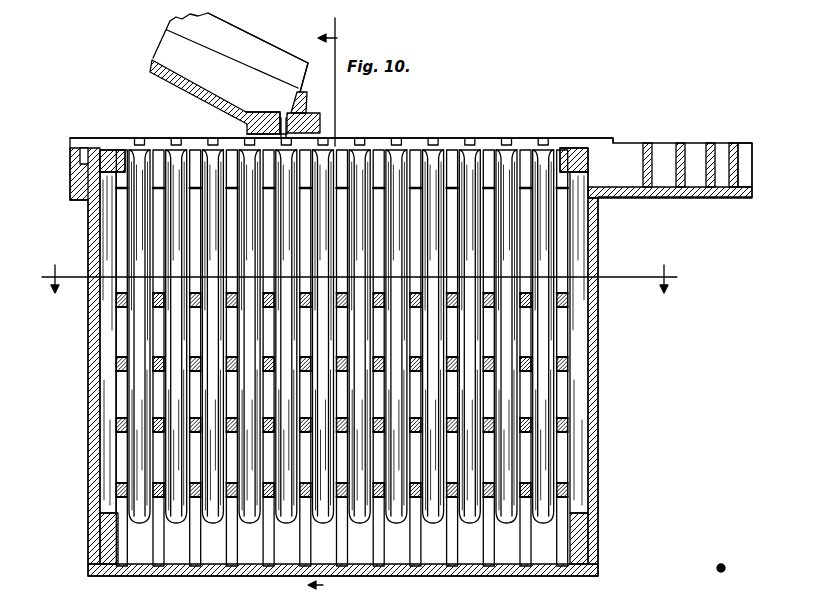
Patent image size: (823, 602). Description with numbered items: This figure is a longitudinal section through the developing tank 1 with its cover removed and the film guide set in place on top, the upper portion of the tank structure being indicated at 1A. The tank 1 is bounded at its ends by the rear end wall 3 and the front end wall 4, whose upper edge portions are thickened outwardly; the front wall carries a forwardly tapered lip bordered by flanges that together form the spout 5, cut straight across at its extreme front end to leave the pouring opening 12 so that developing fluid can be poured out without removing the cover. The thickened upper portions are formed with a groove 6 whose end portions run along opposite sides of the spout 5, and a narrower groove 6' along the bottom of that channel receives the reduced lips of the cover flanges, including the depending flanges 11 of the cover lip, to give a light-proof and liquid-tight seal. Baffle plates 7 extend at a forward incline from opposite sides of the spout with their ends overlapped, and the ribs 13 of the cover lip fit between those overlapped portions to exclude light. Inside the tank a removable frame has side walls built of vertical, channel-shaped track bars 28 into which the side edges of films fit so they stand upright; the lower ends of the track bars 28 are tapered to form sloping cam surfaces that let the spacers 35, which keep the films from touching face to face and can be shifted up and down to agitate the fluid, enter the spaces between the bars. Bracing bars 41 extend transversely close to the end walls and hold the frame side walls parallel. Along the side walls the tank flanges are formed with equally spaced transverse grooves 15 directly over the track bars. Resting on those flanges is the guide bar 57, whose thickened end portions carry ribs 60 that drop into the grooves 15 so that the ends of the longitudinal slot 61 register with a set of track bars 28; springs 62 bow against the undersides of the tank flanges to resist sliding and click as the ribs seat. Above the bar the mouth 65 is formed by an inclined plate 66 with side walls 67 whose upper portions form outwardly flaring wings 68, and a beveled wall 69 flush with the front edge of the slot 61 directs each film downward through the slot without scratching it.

The tank 1 is at (532, 572).
The cover 1A is at (588, 137).
The rear end wall 3 is at (88, 340).
The front end wall 4 is at (600, 387).
The spout 5 is at (676, 197).
The groove 6 is at (68, 138).
The groove 6' is at (62, 182).
The baffle plates 7 is at (730, 154).
The depending flanges 11 is at (338, 307).
The pouring opening 12 is at (750, 176).
The ribs 13 is at (358, 270).
The transverse grooves 15 is at (103, 588).
The track bars 28 is at (389, 150).
The spacers 35 is at (528, 543).
The bracing bars 41 is at (108, 152).
The guide bar 57 is at (288, 132).
The ribs 60 is at (272, 127).
The slot 61 is at (306, 108).
The springs 62 is at (79, 593).
The mouth 65 is at (152, 64).
The plate 66 is at (165, 58).
The side walls 67 is at (232, 78).
The wings 68 is at (308, 70).
The wall 69 is at (291, 95).